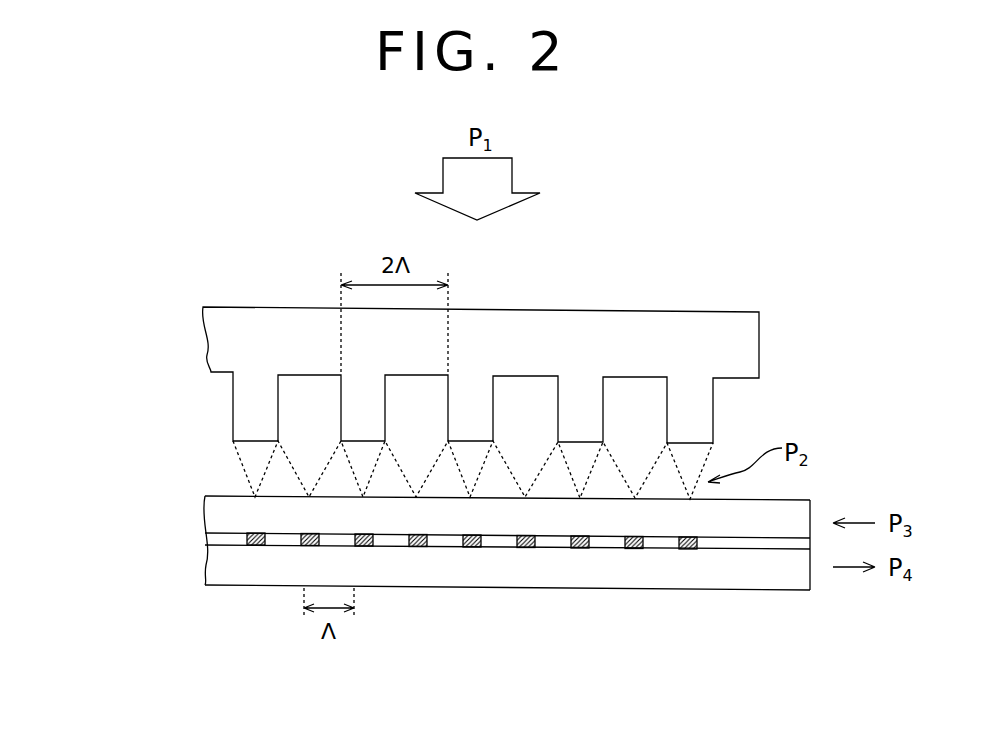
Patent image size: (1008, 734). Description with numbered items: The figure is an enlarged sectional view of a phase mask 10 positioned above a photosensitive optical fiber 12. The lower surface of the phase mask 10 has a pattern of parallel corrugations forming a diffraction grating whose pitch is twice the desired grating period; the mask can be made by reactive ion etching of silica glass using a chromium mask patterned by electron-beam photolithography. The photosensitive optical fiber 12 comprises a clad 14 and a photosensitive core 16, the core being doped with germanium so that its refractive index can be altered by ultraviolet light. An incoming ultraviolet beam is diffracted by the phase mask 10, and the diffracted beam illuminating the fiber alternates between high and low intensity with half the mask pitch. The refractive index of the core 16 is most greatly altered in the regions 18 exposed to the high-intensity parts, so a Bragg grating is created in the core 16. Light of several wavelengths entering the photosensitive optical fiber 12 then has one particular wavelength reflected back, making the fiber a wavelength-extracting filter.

The phase mask 10 is at (759, 338).
The photosensitive optical fiber 12 is at (442, 565).
The clad 14 is at (208, 515).
The photosensitive core 16 is at (215, 568).
The regions 18 is at (579, 549).